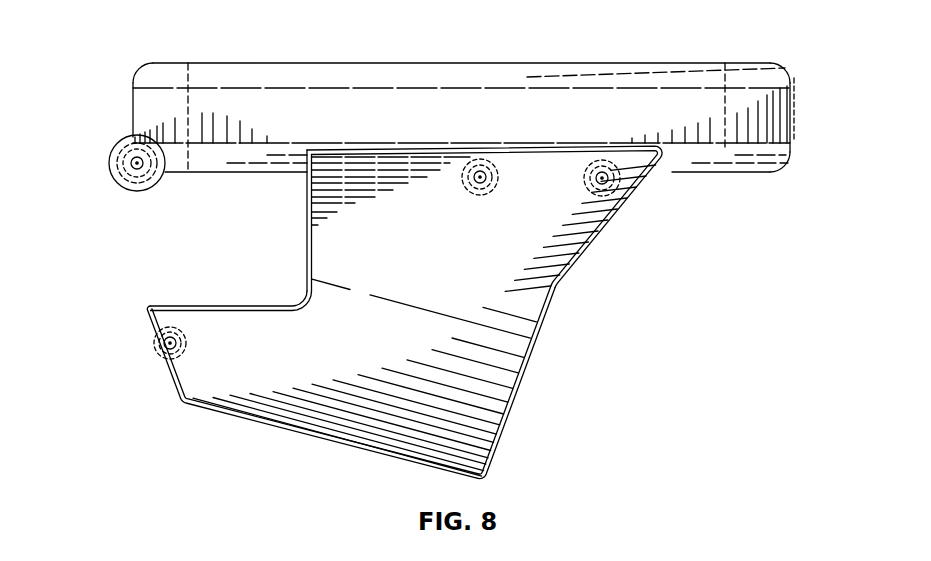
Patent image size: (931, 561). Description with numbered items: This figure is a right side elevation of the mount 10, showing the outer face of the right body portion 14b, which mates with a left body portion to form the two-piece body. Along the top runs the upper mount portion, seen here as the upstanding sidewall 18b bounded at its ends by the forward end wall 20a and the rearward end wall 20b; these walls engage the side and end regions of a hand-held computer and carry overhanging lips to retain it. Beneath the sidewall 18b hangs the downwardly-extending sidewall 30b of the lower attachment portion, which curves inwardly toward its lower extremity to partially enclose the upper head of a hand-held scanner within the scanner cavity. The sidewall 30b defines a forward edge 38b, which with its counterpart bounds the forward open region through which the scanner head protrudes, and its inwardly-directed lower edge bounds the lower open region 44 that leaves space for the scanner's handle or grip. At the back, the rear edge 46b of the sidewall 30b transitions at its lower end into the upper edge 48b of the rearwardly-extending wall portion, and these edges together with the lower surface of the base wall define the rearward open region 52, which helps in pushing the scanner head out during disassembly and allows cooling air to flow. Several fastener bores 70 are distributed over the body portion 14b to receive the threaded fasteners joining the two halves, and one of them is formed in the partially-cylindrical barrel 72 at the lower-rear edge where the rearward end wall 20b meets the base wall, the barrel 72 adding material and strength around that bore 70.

The mount 10 is at (691, 28).
The right body portion 14b is at (440, 63).
The upstanding sidewall 18b is at (430, 126).
The forward end wall 20a is at (795, 83).
The rearward end wall 20b is at (133, 92).
The downwardly-extending sidewall 30b is at (368, 312).
The forward edge 38b is at (527, 383).
The lower open region 44 is at (574, 312).
The rear edge 46b is at (304, 221).
The upper edge 48b is at (228, 303).
The rearward open region 52 is at (134, 265).
The fastener bore 70 is at (132, 158).
The partially-cylindrical barrel 72 is at (133, 190).